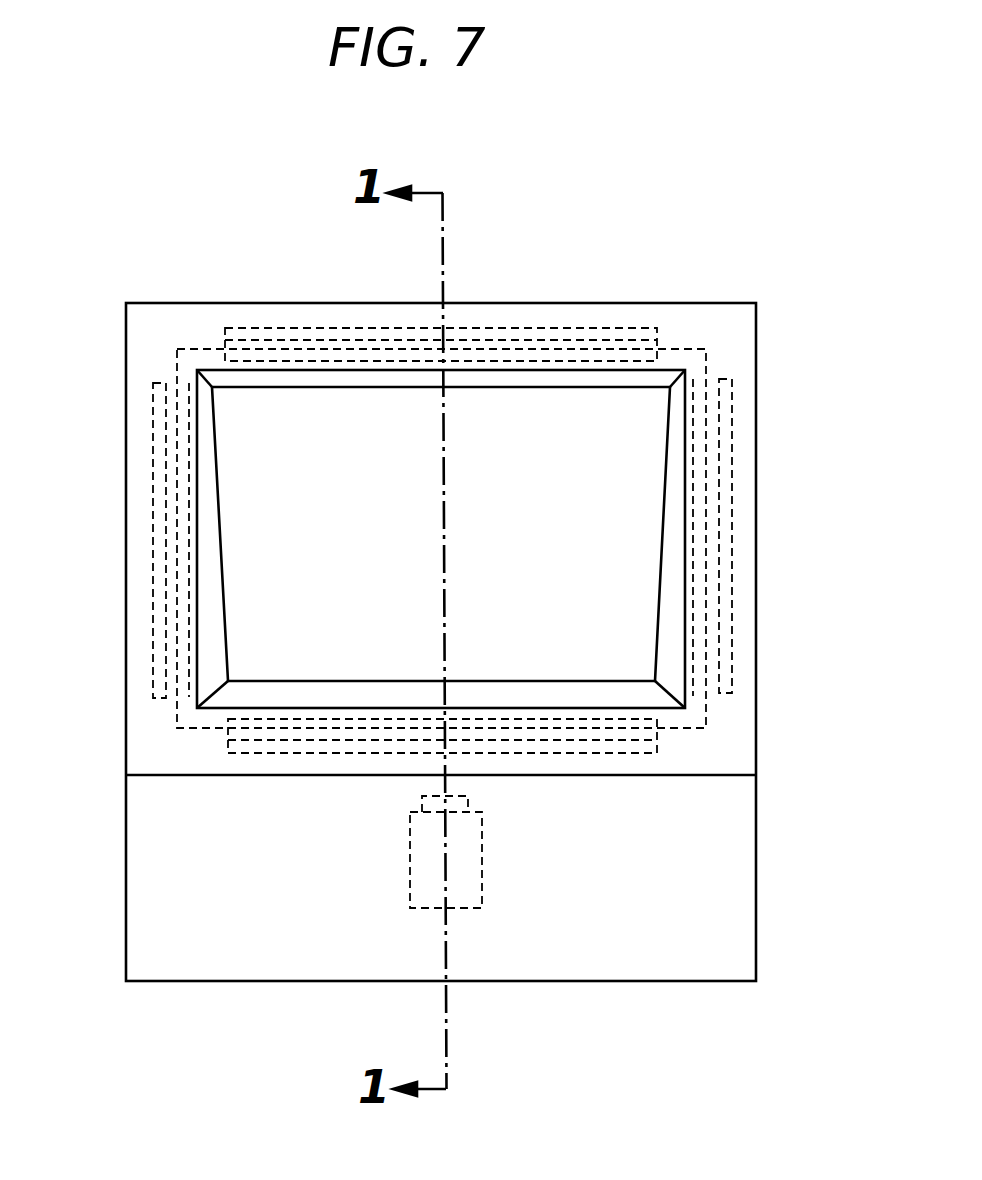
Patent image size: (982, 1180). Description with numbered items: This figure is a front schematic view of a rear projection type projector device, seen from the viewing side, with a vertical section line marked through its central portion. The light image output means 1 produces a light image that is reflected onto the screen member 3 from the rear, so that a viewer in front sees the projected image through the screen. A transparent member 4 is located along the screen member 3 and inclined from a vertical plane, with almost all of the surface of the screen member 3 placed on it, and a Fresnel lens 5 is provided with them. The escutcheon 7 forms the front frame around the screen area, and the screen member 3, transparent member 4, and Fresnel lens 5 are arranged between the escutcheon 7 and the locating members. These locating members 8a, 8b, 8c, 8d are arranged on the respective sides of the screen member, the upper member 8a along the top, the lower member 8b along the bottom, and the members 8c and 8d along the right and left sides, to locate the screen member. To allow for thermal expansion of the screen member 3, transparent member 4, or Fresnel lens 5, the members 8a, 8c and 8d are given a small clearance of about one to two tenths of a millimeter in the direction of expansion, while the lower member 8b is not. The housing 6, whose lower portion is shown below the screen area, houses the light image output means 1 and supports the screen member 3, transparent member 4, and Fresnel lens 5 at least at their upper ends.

The light image output means 1 is at (410, 888).
The screen member 3 is at (554, 534).
The transparent member 4 is at (554, 534).
The Fresnel lens 5 is at (707, 352).
The housing 6 is at (735, 853).
The escutcheon 7 is at (705, 309).
The upper locating member 8a is at (262, 328).
The lower locating member 8b is at (237, 756).
The right locating member 8c is at (732, 664).
The left locating member 8d is at (153, 671).